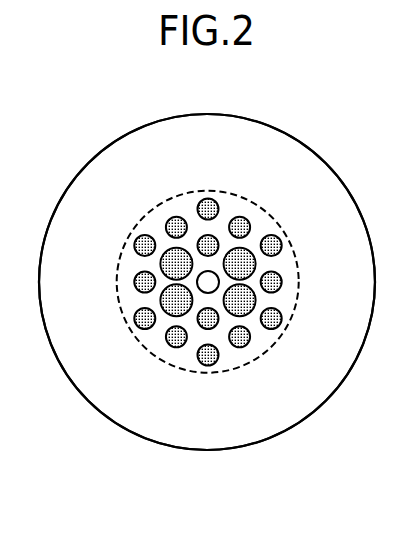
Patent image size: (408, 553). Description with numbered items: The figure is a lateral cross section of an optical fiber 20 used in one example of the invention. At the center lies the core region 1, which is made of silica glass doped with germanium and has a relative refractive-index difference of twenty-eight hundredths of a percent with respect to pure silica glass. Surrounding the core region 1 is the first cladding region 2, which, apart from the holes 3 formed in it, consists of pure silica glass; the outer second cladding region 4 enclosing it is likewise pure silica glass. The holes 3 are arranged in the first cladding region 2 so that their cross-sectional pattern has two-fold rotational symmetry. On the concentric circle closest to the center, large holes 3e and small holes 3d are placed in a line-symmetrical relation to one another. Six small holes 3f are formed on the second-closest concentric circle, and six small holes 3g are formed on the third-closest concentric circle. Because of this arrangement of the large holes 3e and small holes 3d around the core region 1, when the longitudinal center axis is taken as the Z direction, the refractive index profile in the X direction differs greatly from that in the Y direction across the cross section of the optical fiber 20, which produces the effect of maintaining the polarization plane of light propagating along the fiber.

The optical fiber 20 is at (259, 121).
The core region 1 is at (208, 282).
The first cladding region 2 is at (288, 277).
The holes 3 is at (133, 270).
The small holes 3d is at (208, 320).
The large holes 3e is at (176, 303).
The small holes 3f is at (238, 340).
The small holes 3g is at (208, 357).
The second cladding region 4 is at (322, 385).